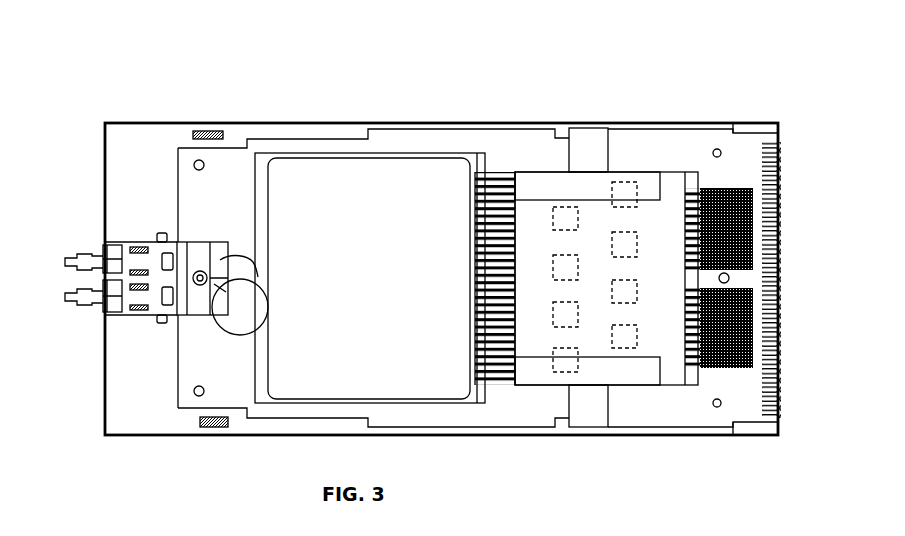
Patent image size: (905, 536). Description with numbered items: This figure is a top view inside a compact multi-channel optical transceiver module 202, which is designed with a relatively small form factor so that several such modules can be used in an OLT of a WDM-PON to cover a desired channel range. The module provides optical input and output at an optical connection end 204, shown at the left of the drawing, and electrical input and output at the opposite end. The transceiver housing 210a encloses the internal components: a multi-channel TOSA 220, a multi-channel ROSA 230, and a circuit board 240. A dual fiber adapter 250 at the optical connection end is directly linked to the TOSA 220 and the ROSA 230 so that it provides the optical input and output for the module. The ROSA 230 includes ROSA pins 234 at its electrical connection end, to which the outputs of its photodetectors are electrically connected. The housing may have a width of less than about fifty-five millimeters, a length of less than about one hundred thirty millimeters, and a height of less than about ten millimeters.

The compact multi-channel optical transceiver module 202 is at (189, 79).
The optical connection end 204 is at (78, 142).
The transceiver housing 210a is at (165, 434).
The multi-channel TOSA 220 is at (439, 416).
The multi-channel ROSA 230 is at (672, 403).
The ROSA pins 234 is at (731, 186).
The circuit board 240 is at (513, 421).
The dual fiber adapter 250 is at (177, 226).